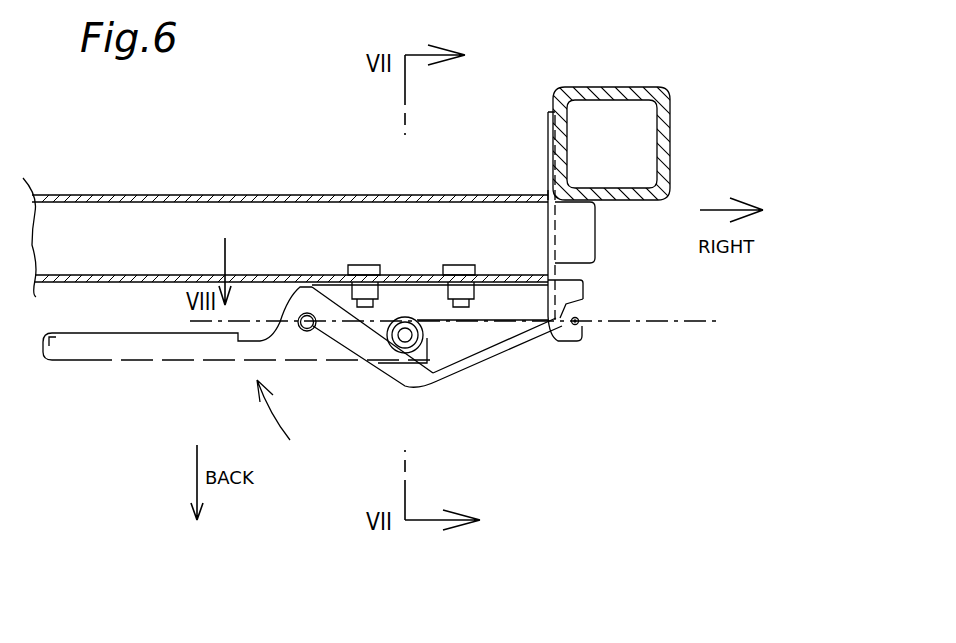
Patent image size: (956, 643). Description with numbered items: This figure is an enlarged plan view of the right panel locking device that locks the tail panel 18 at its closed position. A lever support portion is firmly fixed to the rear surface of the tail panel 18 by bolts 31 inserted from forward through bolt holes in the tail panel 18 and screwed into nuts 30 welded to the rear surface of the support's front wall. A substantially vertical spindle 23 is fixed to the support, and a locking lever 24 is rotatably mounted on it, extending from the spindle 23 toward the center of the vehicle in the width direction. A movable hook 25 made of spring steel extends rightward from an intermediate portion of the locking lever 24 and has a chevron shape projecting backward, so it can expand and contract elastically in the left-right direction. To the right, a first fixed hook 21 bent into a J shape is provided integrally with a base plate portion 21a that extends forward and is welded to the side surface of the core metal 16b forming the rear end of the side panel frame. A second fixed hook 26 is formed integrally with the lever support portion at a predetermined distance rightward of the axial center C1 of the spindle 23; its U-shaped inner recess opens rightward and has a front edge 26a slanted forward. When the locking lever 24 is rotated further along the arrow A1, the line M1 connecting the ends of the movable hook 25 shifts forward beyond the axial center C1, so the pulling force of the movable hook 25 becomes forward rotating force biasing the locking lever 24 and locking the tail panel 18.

The tail panel 18 is at (118, 275).
The core metal 16b is at (665, 165).
The first fixed hook 21 is at (577, 322).
The base plate portion 21a is at (548, 190).
The spindle 23 is at (405, 337).
The locking lever 24 is at (137, 350).
The movable hook 25 is at (493, 357).
The second fixed hook 26 is at (565, 343).
The front edge 26a is at (572, 307).
The nut 30 is at (372, 297).
The bolt 31 is at (358, 264).
The axial center C1 is at (405, 340).
The arrow A1 is at (288, 410).
The line M1 is at (648, 321).